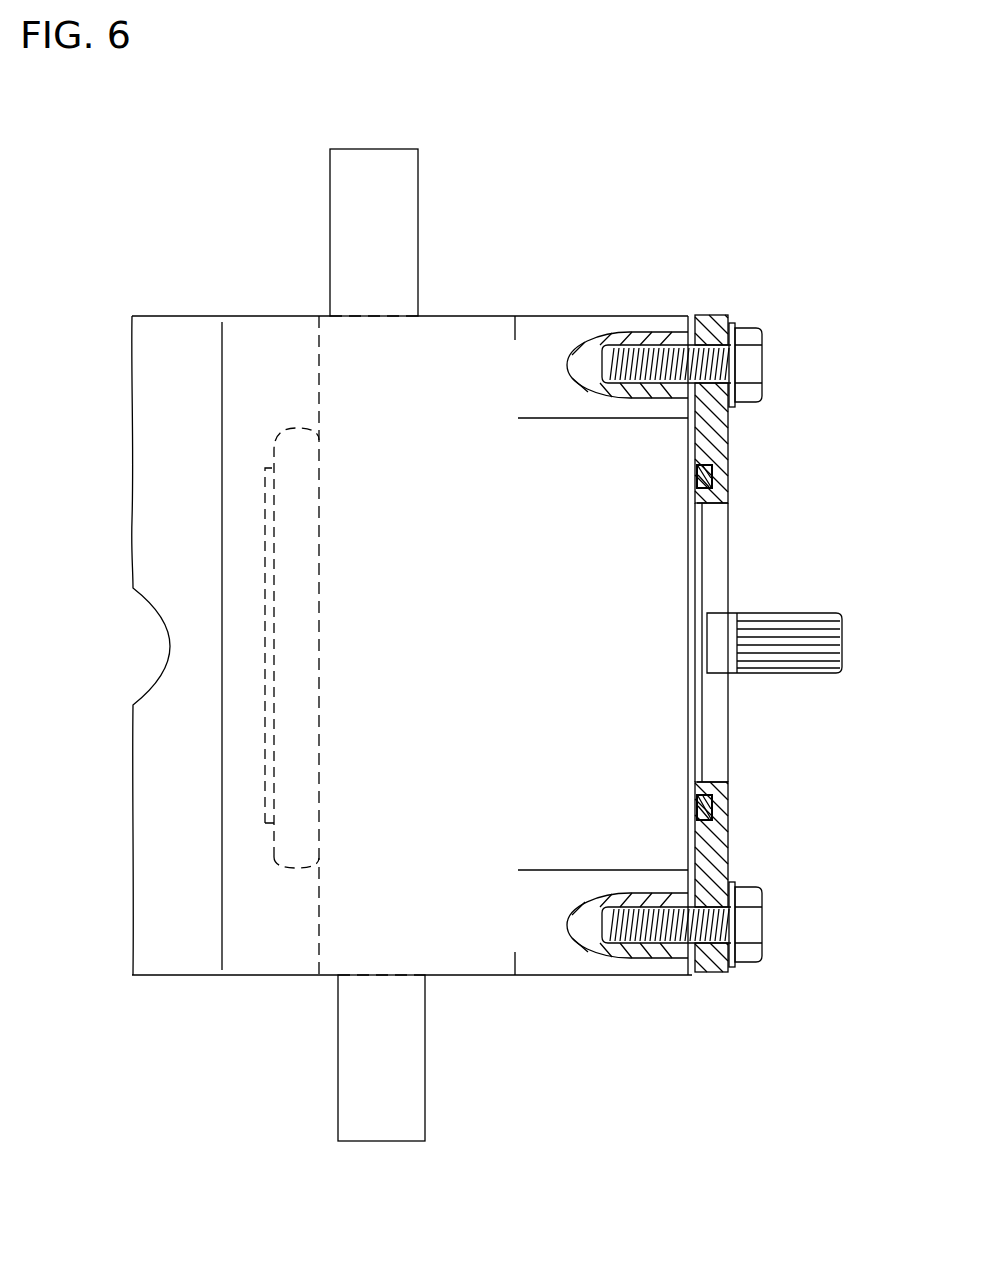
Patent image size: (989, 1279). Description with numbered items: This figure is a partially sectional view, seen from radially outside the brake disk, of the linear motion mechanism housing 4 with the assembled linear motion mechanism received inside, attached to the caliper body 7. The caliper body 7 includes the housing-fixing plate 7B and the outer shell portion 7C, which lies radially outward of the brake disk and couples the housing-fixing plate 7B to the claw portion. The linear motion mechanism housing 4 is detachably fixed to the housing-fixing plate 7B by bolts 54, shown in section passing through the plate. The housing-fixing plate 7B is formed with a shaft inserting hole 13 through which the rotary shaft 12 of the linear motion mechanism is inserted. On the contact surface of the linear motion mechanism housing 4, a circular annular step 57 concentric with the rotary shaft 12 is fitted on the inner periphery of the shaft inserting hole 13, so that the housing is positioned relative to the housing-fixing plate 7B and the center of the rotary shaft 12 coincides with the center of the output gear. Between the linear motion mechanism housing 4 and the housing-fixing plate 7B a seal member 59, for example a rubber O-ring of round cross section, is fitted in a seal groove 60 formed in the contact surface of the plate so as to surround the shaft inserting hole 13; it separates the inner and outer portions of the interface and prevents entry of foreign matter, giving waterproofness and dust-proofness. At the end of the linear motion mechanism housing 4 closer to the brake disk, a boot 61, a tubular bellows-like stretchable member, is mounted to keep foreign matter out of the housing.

The caliper body 7 is at (180, 316).
The outer shell portion 7C is at (472, 340).
The boot 61 is at (292, 430).
The linear motion mechanism housing 4 is at (557, 337).
The housing-fixing plate 7B is at (713, 325).
The bolts 54 is at (756, 365).
The seal member 59 is at (706, 480).
The seal groove 60 is at (713, 482).
The rotary shaft 12 is at (800, 640).
The circular annular step 57 is at (706, 713).
The shaft inserting hole 13 is at (715, 787).